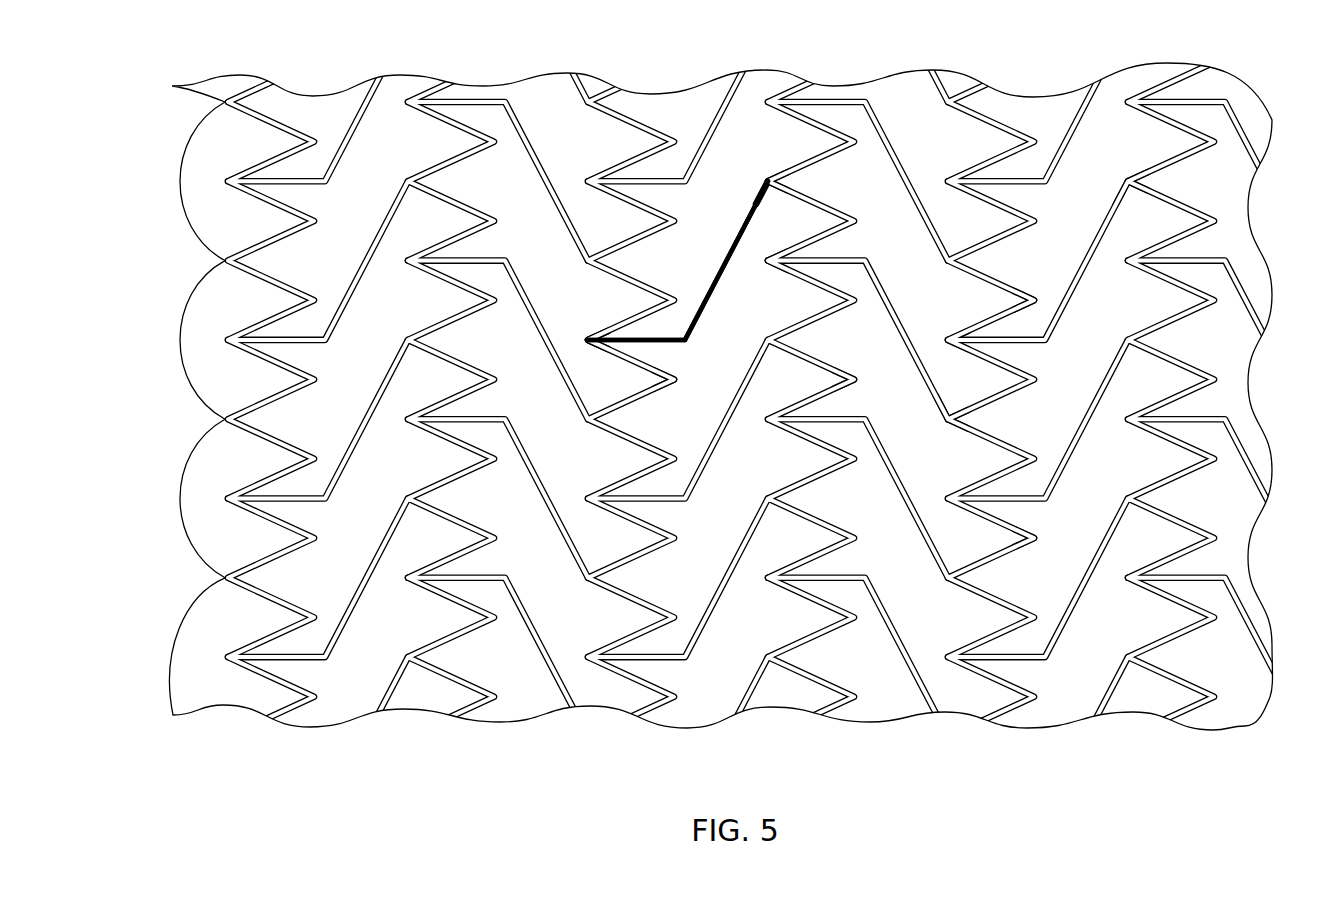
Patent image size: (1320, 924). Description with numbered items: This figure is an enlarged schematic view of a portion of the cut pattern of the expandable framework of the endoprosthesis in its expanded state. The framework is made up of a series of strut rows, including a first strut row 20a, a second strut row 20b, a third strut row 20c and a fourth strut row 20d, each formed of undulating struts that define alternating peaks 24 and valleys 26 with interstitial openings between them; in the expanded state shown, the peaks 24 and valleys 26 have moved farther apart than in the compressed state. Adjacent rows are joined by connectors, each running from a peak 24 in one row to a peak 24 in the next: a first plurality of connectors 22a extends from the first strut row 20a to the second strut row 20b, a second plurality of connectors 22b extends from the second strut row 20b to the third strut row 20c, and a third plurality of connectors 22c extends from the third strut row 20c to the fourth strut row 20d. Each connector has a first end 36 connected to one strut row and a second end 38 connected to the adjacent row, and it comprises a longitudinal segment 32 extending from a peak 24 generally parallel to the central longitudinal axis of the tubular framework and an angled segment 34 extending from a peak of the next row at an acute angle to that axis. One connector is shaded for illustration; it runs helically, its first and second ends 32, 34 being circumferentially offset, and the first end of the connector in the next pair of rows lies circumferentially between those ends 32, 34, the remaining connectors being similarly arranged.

The first strut row 20a is at (617, 163).
The second strut row 20b is at (802, 160).
The third strut row 20c is at (985, 158).
The fourth strut row 20d is at (1165, 160).
The first plurality of connectors 22a is at (745, 216).
The second plurality of connectors 22b is at (893, 312).
The third plurality of connectors 22c is at (1083, 266).
The peak 24 is at (769, 188).
The valley 26 is at (676, 381).
The longitudinal segment 32 is at (647, 337).
The angled segment 34 is at (716, 279).
The first end 36 is at (767, 265).
The second end 38 is at (762, 180).